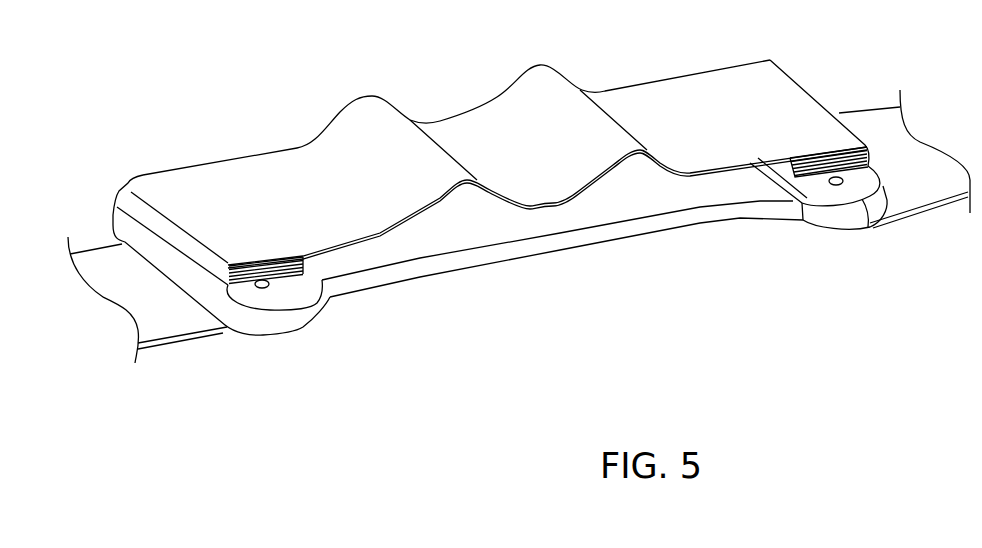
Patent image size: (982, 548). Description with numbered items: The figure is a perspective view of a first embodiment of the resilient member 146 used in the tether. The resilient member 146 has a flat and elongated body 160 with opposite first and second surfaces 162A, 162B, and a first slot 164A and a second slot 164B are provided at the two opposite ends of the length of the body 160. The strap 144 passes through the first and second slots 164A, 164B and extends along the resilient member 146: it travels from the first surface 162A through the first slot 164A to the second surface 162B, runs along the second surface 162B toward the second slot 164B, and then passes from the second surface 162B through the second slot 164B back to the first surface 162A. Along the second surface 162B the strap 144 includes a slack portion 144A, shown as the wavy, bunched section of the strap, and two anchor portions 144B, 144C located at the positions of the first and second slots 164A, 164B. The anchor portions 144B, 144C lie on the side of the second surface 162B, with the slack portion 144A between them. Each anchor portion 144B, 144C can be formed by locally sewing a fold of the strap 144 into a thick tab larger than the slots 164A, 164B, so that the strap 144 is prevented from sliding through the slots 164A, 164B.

The strap 144 is at (164, 328).
The slack portion 144A is at (473, 127).
The anchor portion 144B is at (148, 197).
The anchor portion 144C is at (820, 105).
The resilient member 146 is at (594, 335).
The body 160 is at (500, 246).
The first surface 162A is at (653, 232).
The second surface 162B is at (663, 197).
The first slot 164A is at (286, 295).
The second slot 164B is at (853, 193).